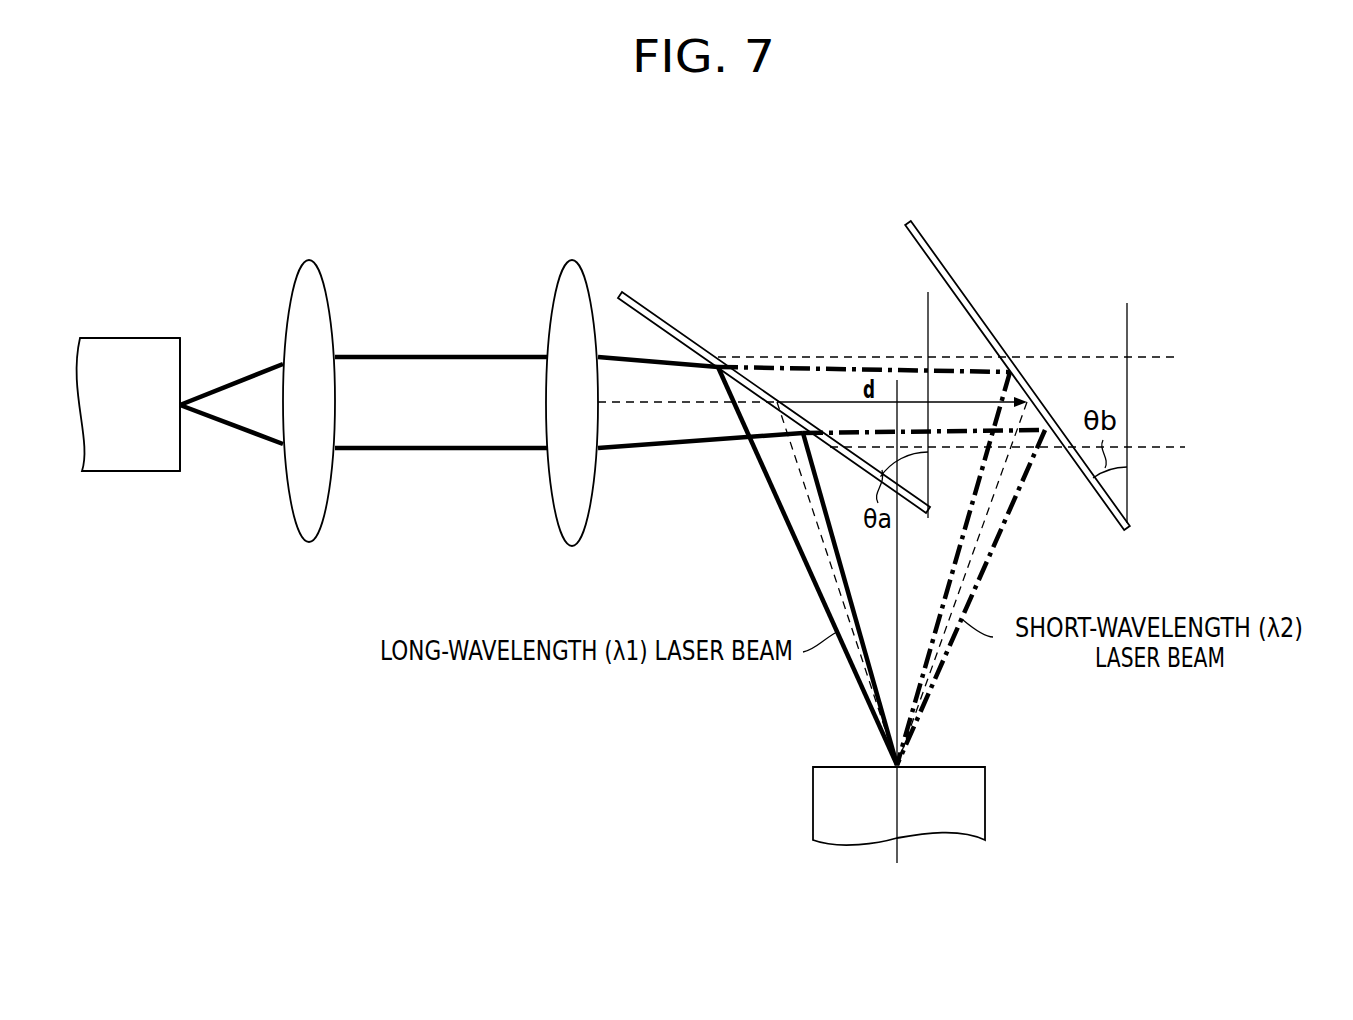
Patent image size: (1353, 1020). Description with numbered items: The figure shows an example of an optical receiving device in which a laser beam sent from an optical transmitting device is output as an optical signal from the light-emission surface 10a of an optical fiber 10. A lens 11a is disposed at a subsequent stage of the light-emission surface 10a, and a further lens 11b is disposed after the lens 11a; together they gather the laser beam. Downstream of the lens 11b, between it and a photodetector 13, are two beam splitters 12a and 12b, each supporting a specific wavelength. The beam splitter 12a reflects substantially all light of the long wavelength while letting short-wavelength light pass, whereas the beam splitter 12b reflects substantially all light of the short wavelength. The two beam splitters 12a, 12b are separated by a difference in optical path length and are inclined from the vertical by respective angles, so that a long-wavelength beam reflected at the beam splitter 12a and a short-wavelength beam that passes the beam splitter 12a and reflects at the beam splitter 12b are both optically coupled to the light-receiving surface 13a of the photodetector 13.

The optical fiber 10 is at (120, 355).
The light-emission surface 10a is at (183, 360).
The lens 11a is at (309, 260).
The lens 11b is at (572, 262).
The beam splitter 12a is at (678, 327).
The beam splitter 12b is at (953, 278).
The photodetector 13 is at (833, 803).
The light-receiving surface 13a is at (955, 767).